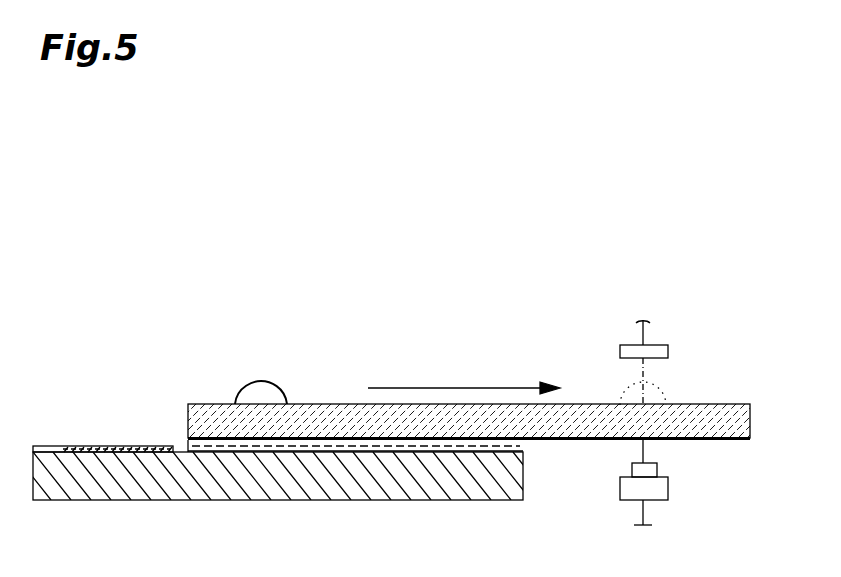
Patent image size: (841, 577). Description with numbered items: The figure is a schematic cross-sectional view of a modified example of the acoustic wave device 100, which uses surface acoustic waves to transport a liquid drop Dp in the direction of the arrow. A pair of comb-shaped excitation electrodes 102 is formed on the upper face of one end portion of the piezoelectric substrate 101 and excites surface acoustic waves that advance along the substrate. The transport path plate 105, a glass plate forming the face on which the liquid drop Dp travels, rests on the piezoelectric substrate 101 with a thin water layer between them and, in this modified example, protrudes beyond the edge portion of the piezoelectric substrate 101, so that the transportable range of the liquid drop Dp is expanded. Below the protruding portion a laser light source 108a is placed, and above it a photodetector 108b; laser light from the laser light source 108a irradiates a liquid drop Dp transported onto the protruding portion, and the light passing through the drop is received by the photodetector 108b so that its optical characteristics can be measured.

The acoustic wave device 100 is at (141, 378).
The piezoelectric substrate 101 is at (502, 500).
The excitation electrodes 102 is at (70, 446).
The transport path plate 105 is at (203, 404).
The liquid drop Dp is at (262, 380).
The laser light source 108a is at (668, 488).
The photodetector 108b is at (668, 351).